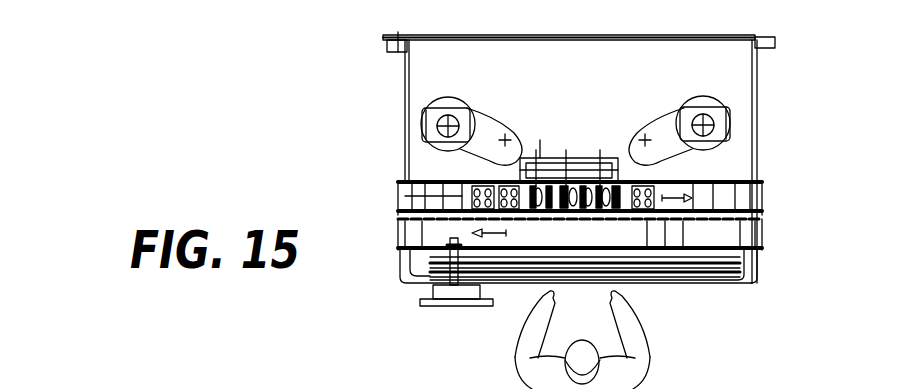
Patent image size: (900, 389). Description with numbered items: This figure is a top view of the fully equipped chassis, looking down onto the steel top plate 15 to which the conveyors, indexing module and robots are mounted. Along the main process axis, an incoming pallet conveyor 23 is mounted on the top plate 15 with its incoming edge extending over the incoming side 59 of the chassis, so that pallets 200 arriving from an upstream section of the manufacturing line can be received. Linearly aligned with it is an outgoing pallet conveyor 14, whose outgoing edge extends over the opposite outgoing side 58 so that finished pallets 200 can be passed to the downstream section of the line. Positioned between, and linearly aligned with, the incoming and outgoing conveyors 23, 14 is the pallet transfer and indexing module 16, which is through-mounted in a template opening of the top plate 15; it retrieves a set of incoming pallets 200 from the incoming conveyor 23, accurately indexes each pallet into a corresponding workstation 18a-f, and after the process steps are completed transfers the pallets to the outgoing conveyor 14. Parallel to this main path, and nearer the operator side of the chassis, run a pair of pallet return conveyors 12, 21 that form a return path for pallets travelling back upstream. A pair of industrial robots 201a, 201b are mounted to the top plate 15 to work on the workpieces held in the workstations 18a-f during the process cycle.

The top plate 15 is at (715, 75).
The industrial robot 201a is at (423, 101).
The industrial robot 201b is at (731, 121).
The incoming side 59 is at (310, 163).
The outgoing side 58 is at (803, 154).
The pallet transfer and indexing module 16 is at (597, 158).
The outgoing pallet conveyor 14 is at (762, 200).
The pallet return conveyor 12 is at (762, 234).
The incoming pallet conveyor 23 is at (399, 190).
The pallet 200 is at (462, 187).
The workstations 18a-f is at (552, 185).
The pallet return conveyor 21 is at (404, 236).